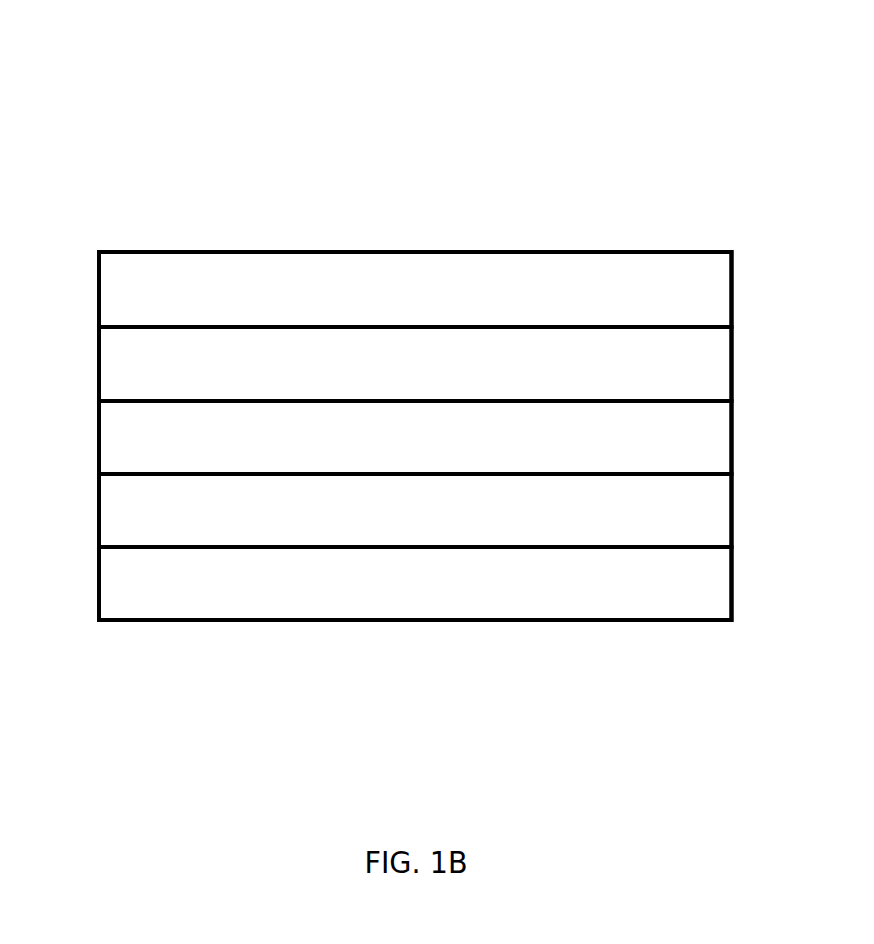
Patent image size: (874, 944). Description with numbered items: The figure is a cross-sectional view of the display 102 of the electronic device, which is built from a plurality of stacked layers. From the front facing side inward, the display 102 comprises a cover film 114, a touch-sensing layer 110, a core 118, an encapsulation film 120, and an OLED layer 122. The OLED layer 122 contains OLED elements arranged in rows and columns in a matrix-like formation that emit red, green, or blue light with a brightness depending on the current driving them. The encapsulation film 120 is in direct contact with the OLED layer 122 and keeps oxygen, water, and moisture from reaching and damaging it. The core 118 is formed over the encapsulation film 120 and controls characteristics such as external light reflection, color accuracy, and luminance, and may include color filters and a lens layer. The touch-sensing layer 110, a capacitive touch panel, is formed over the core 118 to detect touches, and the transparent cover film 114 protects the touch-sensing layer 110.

The display 102 is at (115, 181).
The cover film 114 is at (733, 288).
The touch-sensing layer 110 is at (733, 363).
The core 118 is at (733, 439).
The encapsulation film 120 is at (733, 511).
The OLED layer 122 is at (733, 582).